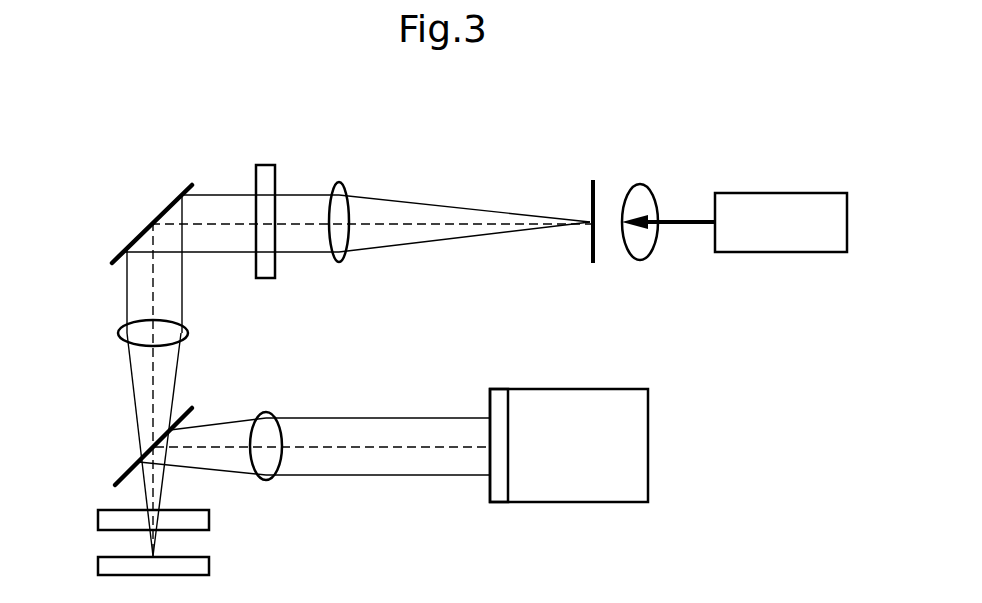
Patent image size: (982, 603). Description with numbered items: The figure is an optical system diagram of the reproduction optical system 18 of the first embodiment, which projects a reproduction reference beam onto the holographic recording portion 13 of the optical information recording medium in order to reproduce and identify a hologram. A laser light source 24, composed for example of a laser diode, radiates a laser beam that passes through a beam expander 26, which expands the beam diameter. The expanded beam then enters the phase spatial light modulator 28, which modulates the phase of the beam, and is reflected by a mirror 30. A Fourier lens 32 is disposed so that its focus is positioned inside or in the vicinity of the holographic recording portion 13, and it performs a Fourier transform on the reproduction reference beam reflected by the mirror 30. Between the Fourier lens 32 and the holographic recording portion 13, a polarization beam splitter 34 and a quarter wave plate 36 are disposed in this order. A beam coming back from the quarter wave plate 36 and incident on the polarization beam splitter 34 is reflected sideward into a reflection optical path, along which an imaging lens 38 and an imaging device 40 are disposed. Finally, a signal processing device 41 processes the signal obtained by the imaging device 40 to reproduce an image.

The holographic recording portion 13 is at (209, 565).
The reproduction optical system 18 is at (71, 405).
The laser light source 24 is at (798, 193).
The beam expander 26 is at (658, 176).
The phase spatial light modulator 28 is at (265, 165).
The mirror 30 is at (168, 203).
The Fourier lens 32 is at (188, 333).
The polarization beam splitter 34 is at (185, 406).
The quarter wave plate 36 is at (209, 518).
The imaging lens 38 is at (265, 410).
The imaging device 40 is at (500, 389).
The signal processing device 41 is at (648, 438).